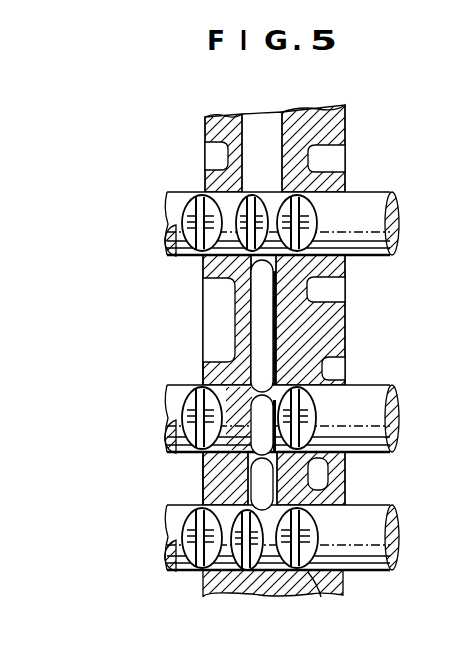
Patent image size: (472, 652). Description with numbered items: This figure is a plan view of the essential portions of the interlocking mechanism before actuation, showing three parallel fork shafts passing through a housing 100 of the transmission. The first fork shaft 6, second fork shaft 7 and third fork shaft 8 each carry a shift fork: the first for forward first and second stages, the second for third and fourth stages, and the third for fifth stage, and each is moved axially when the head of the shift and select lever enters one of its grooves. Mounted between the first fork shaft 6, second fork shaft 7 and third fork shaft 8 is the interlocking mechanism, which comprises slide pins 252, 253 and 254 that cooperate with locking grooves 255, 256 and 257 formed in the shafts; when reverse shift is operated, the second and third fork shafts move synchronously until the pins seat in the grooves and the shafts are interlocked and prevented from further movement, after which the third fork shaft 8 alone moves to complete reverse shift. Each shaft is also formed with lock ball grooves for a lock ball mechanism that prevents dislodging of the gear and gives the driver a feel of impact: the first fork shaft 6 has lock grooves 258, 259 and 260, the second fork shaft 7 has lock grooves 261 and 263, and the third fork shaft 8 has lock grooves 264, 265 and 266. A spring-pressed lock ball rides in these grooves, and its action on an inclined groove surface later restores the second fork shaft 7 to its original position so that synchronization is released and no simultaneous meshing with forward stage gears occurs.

The valve housing 100 is at (347, 120).
The first fork shaft 6 is at (400, 232).
The second fork shaft 7 is at (386, 428).
The third fork shaft 8 is at (386, 560).
The slide pin 252 is at (276, 321).
The slide pin 253 is at (345, 370).
The slide pin 254 is at (345, 472).
The locking groove 255 is at (206, 268).
The locking groove 256 is at (208, 378).
The locking groove 257 is at (314, 580).
The lock groove 258 is at (190, 222).
The lock groove 259 is at (228, 200).
The lock groove 260 is at (312, 207).
The lock groove 261 is at (180, 421).
The lock groove 263 is at (312, 405).
The lock groove 264 is at (172, 555).
The lock groove 265 is at (240, 572).
The lock groove 266 is at (321, 597).